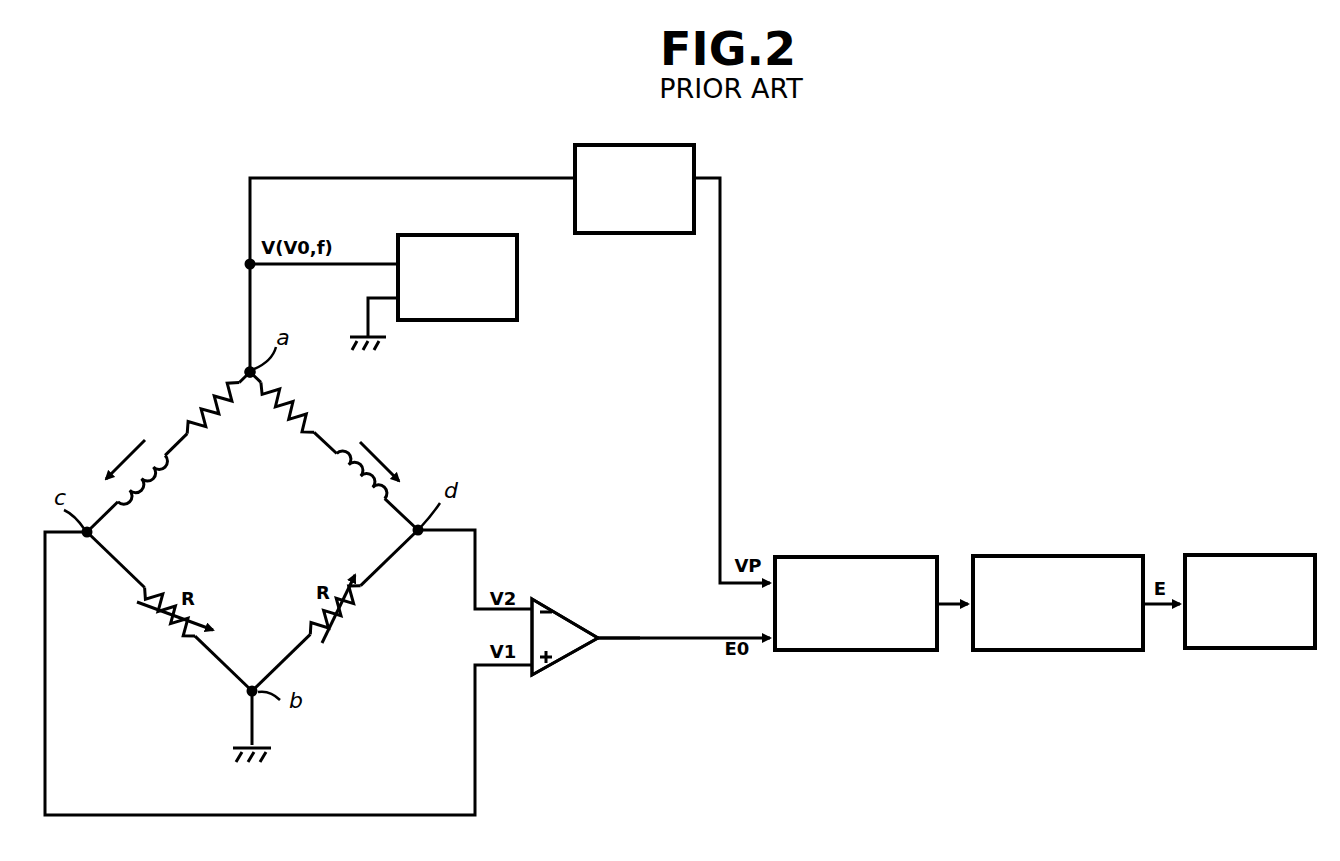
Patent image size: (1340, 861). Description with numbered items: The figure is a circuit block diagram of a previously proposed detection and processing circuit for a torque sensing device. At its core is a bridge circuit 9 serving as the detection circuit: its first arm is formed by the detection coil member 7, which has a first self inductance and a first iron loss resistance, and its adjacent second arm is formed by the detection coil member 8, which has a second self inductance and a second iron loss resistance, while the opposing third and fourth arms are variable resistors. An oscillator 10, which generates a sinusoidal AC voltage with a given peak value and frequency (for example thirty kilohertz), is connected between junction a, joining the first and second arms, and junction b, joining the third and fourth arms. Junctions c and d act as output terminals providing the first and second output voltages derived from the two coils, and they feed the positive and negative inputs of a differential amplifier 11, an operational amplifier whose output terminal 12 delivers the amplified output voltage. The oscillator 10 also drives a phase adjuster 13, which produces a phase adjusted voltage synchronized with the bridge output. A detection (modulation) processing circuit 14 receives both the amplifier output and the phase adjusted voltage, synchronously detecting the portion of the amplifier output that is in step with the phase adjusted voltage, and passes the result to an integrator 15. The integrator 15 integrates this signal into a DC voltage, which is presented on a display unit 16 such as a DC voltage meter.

The detection coil member 7 is at (190, 353).
The detection coil member 8 is at (318, 355).
The bridge circuit 9 is at (240, 364).
The oscillator 10 is at (508, 321).
The differential amplifier 11 is at (563, 663).
The output terminal 12 is at (599, 639).
The phase adjuster 13 is at (631, 234).
The detection (modulation) processing circuit 14 is at (870, 556).
The integrator 15 is at (1064, 555).
The display unit 16 is at (1238, 554).